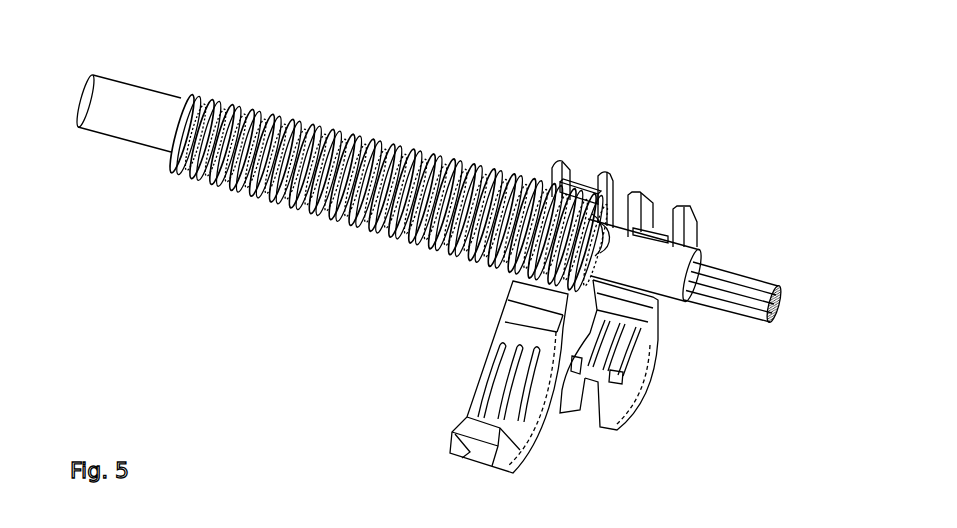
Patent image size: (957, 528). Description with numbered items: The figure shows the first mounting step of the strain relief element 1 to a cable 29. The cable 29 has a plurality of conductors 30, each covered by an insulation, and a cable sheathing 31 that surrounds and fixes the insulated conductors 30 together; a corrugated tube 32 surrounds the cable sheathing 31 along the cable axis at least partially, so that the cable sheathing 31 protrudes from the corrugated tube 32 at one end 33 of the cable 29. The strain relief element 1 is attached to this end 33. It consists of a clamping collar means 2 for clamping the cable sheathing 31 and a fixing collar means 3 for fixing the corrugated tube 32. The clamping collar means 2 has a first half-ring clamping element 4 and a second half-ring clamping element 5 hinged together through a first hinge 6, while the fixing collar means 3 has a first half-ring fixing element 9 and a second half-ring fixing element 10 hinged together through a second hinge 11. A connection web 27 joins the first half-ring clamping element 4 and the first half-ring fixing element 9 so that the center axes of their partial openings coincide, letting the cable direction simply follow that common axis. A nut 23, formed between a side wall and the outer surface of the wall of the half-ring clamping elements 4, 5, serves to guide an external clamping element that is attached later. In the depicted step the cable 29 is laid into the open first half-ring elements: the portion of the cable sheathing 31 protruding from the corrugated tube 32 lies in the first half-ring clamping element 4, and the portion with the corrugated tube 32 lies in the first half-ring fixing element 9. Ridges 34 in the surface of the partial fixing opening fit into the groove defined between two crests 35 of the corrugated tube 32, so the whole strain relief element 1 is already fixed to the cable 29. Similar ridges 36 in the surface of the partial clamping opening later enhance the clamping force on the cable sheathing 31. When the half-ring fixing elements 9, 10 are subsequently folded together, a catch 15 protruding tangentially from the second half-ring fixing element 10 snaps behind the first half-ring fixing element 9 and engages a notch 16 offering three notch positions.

The strain relief element 1 is at (559, 288).
The clamping collar means 2 is at (652, 388).
The fixing collar means 3 is at (447, 379).
The first half-ring clamping element 4 is at (693, 183).
The second half-ring clamping element 5 is at (614, 444).
The first hinge 6 is at (635, 310).
The first half-ring fixing element 9 is at (570, 155).
The second half-ring fixing element 10 is at (433, 459).
The second hinge 11 is at (517, 310).
The catch 15 is at (473, 447).
The notch 16 is at (584, 178).
The nut 23 is at (668, 204).
The connection web 27 is at (515, 281).
The cable 29 is at (389, 155).
The conductors 30 is at (757, 282).
The cable sheathing 31 is at (128, 118).
The corrugated tube 32 is at (370, 132).
The end of the cable 33 is at (707, 243).
The ridges 34 is at (510, 390).
The crests 35 is at (465, 167).
The ridges 36 is at (617, 349).